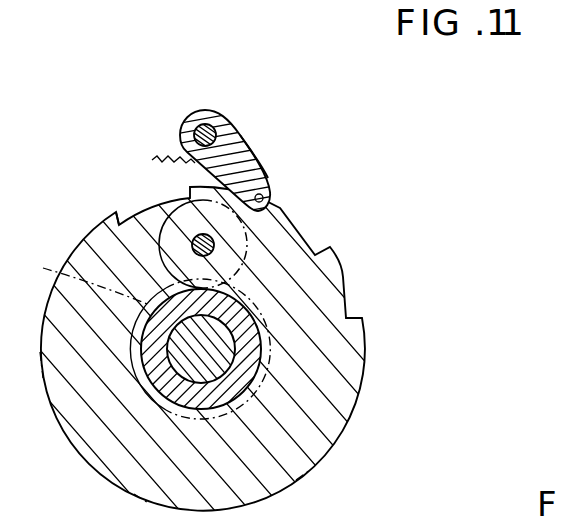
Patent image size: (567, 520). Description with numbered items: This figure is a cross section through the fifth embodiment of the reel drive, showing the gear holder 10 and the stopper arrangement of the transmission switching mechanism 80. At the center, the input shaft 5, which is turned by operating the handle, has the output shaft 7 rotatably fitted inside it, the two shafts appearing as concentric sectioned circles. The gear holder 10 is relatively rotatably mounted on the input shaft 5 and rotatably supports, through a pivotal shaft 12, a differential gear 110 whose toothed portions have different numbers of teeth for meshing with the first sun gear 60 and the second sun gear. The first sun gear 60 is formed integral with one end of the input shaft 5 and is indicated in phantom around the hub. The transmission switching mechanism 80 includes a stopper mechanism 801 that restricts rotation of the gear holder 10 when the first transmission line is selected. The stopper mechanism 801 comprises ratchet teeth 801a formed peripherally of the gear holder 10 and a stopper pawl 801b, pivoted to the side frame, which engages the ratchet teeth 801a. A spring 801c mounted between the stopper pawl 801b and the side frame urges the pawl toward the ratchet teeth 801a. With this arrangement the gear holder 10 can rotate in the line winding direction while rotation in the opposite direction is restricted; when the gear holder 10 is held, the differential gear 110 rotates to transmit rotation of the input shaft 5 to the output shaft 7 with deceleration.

The input shaft 5 is at (245, 320).
The output shaft 7 is at (223, 352).
The gear holder 10 is at (303, 242).
The pivotal shaft 12 is at (168, 262).
The first sun gear 60 is at (162, 369).
The transmission switching mechanism 80 is at (260, 146).
The differential gear 110 is at (112, 221).
The stopper mechanism 801 is at (268, 172).
The ratchet teeth 801a is at (263, 197).
The stopper pawl 801b is at (251, 150).
The spring 801c is at (153, 160).